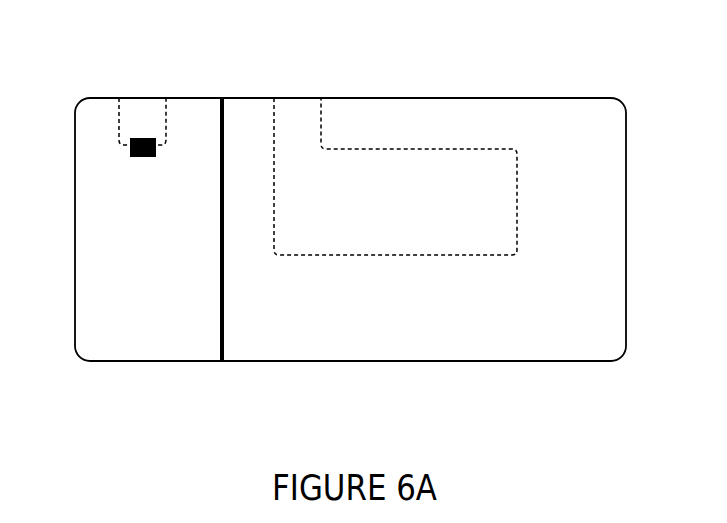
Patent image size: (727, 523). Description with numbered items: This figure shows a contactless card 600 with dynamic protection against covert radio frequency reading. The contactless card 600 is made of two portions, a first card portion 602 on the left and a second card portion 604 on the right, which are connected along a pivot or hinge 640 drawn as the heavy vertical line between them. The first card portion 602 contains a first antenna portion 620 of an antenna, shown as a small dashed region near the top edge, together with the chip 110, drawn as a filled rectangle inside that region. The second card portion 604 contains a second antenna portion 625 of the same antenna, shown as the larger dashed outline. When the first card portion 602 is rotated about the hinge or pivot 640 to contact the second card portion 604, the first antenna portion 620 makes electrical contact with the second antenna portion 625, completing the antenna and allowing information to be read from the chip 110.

The contactless card 600 is at (630, 392).
The pivot or hinge 640 is at (216, 95).
The first card portion 602 is at (156, 314).
The second card portion 604 is at (510, 327).
The first antenna portion 620 is at (110, 121).
The chip 110 is at (136, 172).
The second antenna portion 625 is at (342, 274).